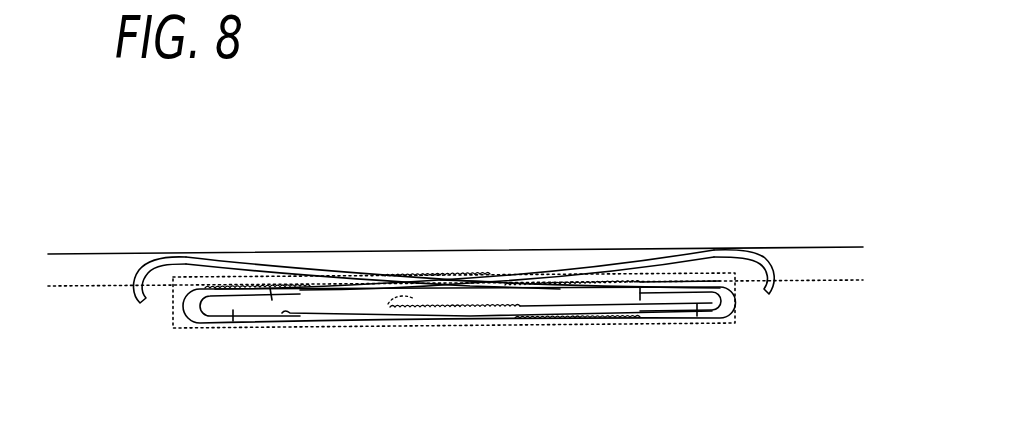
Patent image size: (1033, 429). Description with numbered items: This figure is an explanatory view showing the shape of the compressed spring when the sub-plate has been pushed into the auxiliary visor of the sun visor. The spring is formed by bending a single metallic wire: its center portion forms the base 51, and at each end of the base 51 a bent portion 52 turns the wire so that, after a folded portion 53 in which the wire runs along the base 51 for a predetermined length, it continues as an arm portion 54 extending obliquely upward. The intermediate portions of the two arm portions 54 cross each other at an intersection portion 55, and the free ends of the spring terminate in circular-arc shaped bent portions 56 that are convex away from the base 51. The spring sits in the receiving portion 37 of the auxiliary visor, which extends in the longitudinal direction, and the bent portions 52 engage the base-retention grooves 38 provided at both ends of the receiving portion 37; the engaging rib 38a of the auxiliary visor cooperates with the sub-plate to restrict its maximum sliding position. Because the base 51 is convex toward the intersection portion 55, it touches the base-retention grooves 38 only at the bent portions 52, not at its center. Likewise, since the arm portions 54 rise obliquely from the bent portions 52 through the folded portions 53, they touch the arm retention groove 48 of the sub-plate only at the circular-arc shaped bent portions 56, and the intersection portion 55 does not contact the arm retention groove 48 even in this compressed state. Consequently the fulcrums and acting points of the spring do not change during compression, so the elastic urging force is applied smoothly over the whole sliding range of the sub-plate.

The receiving portion 37 is at (583, 320).
The base-retention grooves 38 is at (233, 313).
The engaging rib 38a is at (382, 318).
The arm retention groove 48 is at (83, 288).
The base 51 is at (481, 313).
The bent portions 52 is at (177, 307).
The folded portion 53 is at (222, 290).
The arm portions 54 is at (325, 270).
The intersection portion 55 is at (460, 278).
The circular-arc shaped bent portions 56 is at (138, 254).